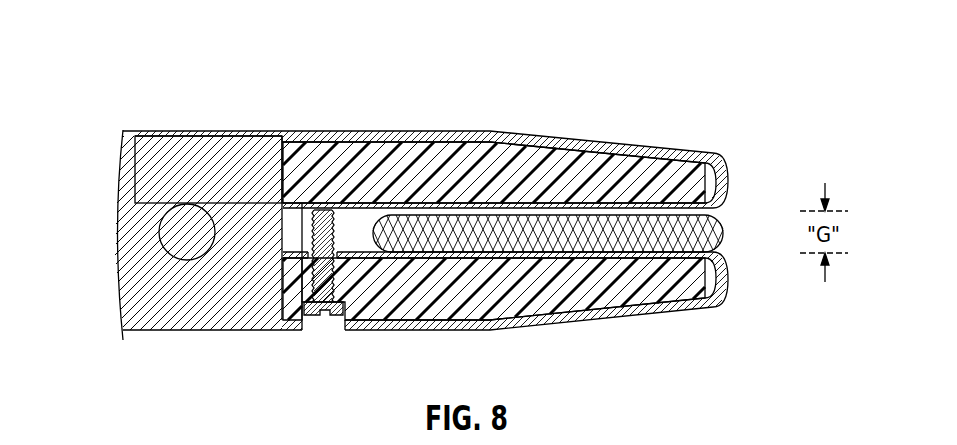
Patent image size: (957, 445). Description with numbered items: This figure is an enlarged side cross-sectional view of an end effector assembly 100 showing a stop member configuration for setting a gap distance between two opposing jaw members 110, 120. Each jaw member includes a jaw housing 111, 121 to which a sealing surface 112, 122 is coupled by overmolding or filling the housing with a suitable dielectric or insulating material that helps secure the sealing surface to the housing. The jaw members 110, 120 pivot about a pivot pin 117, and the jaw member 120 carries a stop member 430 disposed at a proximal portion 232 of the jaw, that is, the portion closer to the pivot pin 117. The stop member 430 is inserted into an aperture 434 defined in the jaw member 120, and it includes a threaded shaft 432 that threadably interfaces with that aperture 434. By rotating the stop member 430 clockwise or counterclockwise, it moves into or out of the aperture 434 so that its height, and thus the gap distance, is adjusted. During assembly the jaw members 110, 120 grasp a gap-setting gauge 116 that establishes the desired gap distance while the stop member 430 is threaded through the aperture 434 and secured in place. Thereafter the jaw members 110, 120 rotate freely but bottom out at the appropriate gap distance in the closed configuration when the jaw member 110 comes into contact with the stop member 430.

The surgical stapling end effector 100 is at (700, 96).
The jaw member 110 is at (461, 148).
The jaw housing 111 is at (638, 150).
The sealing surface 112 is at (578, 200).
The gap-setting gauge 116 is at (720, 233).
The pivot pin 117 is at (187, 227).
The jaw member 120 is at (540, 314).
The jaw housing 121 is at (625, 320).
The sealing surface 122 is at (528, 258).
The proximal portion 232 is at (290, 272).
The stop member 430 is at (333, 315).
The threaded shaft 432 is at (325, 237).
The aperture 434 is at (308, 276).